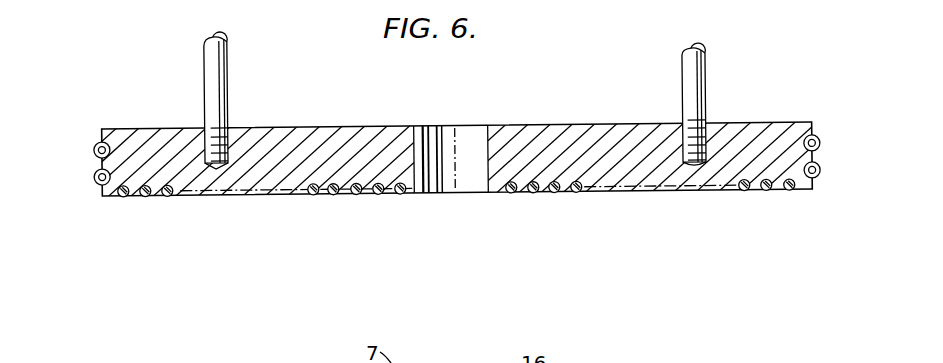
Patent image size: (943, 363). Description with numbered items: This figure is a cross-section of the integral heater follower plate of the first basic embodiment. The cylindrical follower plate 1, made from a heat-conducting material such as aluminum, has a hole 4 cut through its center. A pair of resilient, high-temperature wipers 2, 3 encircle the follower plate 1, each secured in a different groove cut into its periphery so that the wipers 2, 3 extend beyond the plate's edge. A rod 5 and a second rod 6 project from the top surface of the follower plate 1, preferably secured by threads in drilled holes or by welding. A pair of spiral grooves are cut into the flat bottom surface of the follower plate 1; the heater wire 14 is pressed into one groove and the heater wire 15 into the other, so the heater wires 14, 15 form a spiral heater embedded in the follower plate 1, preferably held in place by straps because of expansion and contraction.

The follower plate 1 is at (350, 126).
The wiper 2 is at (95, 147).
The wiper 3 is at (95, 176).
The hole 4 is at (470, 137).
The rod 5 is at (212, 75).
The right pin 6 is at (701, 88).
The heater wire 14 is at (512, 194).
The heater wire 15 is at (534, 194).